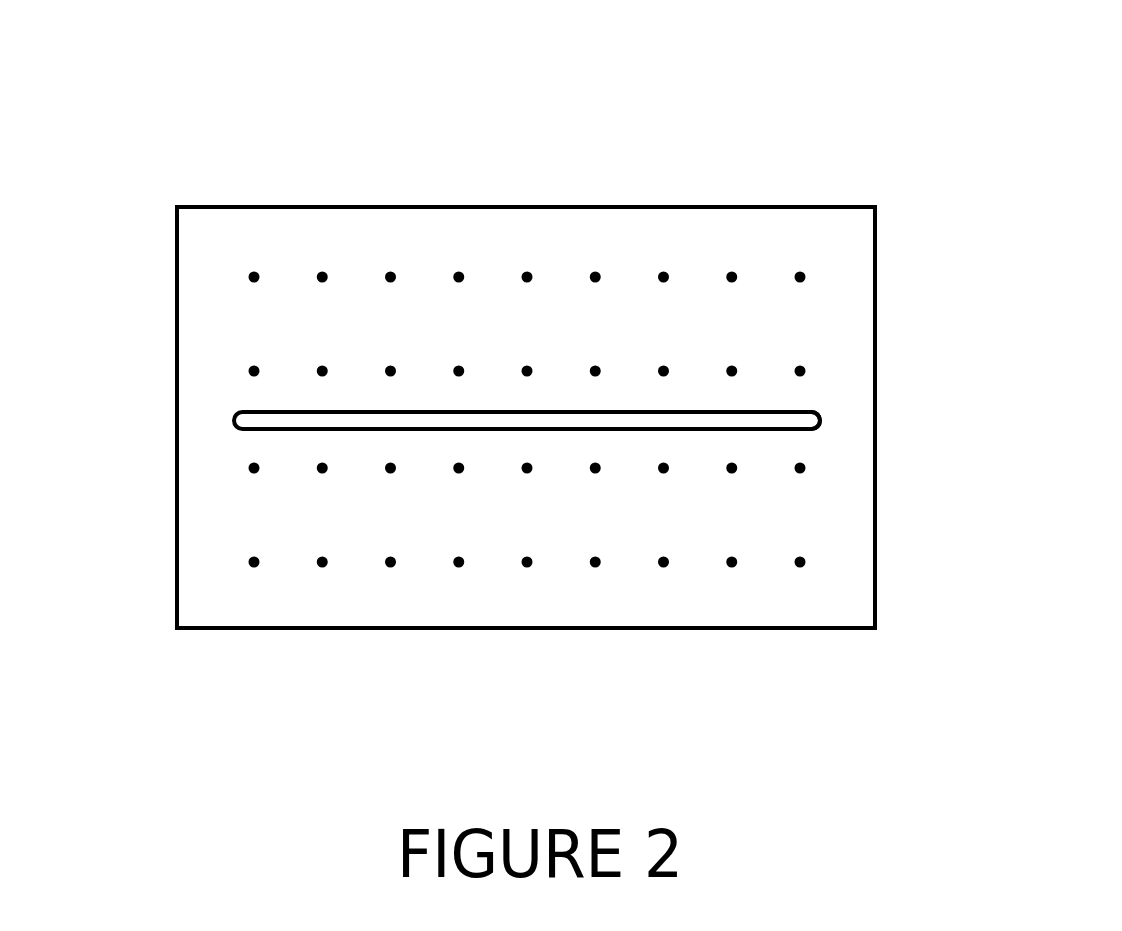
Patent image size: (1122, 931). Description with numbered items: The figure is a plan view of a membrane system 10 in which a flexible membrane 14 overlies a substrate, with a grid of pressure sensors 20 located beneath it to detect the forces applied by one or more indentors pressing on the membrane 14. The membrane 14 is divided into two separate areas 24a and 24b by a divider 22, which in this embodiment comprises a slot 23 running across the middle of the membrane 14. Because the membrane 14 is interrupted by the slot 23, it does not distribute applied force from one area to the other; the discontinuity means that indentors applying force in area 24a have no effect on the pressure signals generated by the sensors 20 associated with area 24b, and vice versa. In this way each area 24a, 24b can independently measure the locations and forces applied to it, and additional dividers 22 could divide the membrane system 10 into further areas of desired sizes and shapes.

The membrane system 10 is at (279, 114).
The membrane 14 is at (427, 248).
The pressure sensors 20 is at (800, 277).
The divider 22 is at (828, 378).
The slot 23 is at (805, 428).
The area 24a is at (615, 337).
The area 24b is at (578, 525).